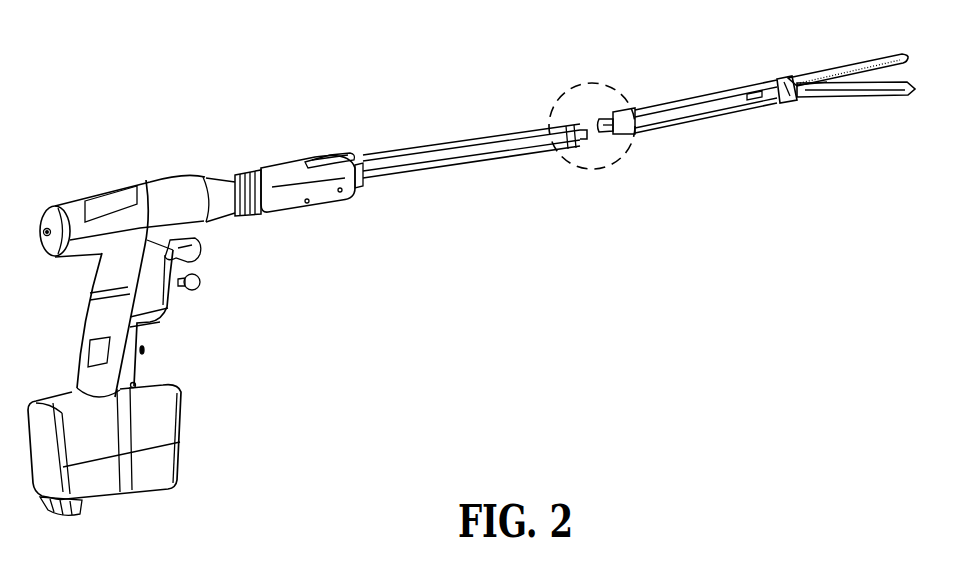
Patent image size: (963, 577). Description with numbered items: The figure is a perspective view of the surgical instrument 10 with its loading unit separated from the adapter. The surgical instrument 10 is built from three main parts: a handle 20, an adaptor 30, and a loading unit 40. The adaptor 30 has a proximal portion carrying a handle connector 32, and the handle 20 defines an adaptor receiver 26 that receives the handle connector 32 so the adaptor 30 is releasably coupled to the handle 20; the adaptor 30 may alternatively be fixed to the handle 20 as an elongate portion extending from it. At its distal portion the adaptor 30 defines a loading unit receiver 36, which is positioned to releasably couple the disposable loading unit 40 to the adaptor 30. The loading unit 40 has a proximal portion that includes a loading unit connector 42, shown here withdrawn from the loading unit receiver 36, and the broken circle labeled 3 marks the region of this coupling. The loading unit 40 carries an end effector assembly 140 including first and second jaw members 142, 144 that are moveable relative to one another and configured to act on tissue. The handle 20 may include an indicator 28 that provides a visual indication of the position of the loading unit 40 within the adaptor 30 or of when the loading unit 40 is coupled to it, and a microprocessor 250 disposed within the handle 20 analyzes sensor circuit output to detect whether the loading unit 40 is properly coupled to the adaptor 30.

The surgical instrument 10 is at (493, 244).
The handle 20 is at (141, 170).
The indicator 28 is at (95, 191).
The adaptor receiver 26 is at (217, 177).
The handle connector 32 is at (241, 178).
The adaptor 30 is at (408, 145).
The loading unit receiver 36 is at (563, 118).
The detail view circle for FIG. 3 is at (612, 86).
The loading unit connector 42 is at (622, 139).
The loading unit 40 is at (715, 85).
The end effector assembly 140 is at (847, 57).
The second jaw member 144 is at (899, 54).
The first jaw member 142 is at (899, 96).
The microprocessor 250 is at (96, 347).